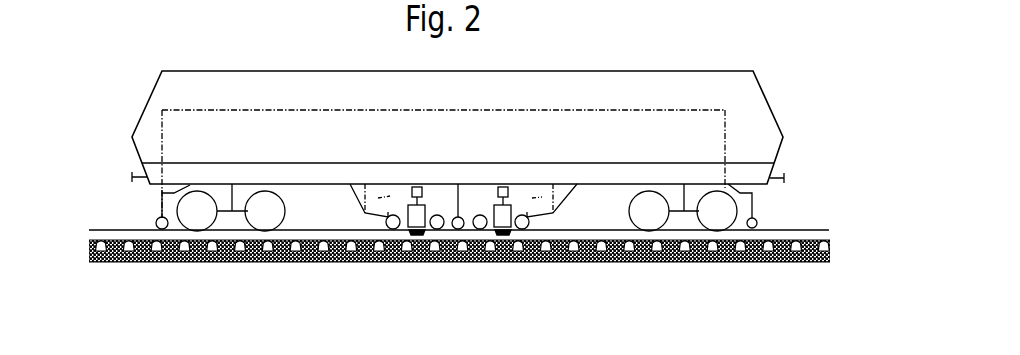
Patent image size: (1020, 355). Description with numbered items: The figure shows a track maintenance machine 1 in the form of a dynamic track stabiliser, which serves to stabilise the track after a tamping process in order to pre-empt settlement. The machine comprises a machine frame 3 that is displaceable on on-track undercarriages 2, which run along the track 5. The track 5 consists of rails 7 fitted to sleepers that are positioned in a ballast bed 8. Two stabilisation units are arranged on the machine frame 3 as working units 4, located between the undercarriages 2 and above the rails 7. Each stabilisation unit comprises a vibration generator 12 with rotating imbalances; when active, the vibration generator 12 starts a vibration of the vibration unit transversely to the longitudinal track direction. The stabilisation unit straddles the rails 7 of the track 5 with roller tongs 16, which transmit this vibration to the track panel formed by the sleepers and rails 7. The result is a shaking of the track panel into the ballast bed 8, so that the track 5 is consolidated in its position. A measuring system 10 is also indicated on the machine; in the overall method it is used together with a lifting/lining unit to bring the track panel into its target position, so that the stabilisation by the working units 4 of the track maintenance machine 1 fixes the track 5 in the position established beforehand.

The track maintenance machine 1 is at (726, 52).
The on-track undercarriages 2 is at (218, 214).
The machine frame 3 is at (628, 171).
The working unit 4 is at (397, 202).
The track 5 is at (785, 268).
The rails 7 is at (803, 235).
The ballast bed 8 is at (142, 263).
The measuring system 10 is at (150, 222).
The vibration generator 12 is at (424, 208).
The roller tongs 16 is at (413, 234).